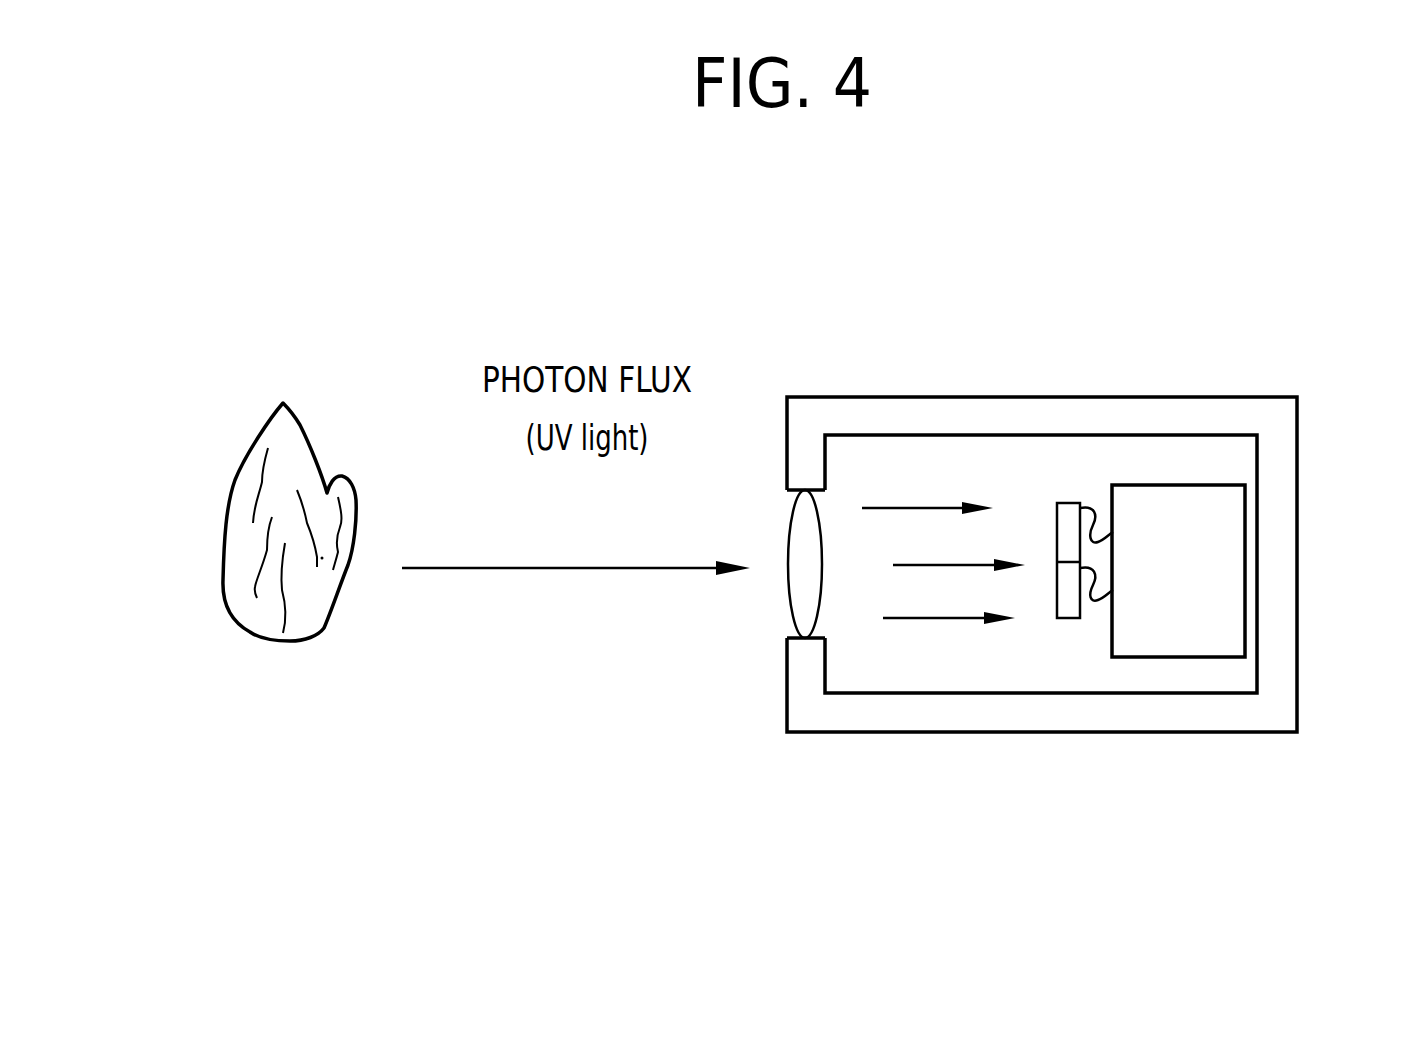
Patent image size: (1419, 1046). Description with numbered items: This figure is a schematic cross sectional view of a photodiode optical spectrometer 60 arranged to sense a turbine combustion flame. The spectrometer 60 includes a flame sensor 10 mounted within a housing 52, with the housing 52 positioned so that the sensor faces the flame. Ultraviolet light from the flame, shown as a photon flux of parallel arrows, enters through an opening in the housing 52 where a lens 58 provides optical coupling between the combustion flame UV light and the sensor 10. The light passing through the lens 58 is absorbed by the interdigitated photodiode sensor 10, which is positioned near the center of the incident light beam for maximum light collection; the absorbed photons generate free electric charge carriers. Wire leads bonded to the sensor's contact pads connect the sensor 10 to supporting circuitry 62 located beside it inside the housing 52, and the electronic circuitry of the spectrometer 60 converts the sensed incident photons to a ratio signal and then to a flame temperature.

The flame sensor 10 is at (1071, 458).
The housing 52 is at (1217, 395).
The lens 58 is at (807, 613).
The photodiode optical spectrometer 60 is at (1103, 504).
The supporting circuitry 62 is at (1215, 570).